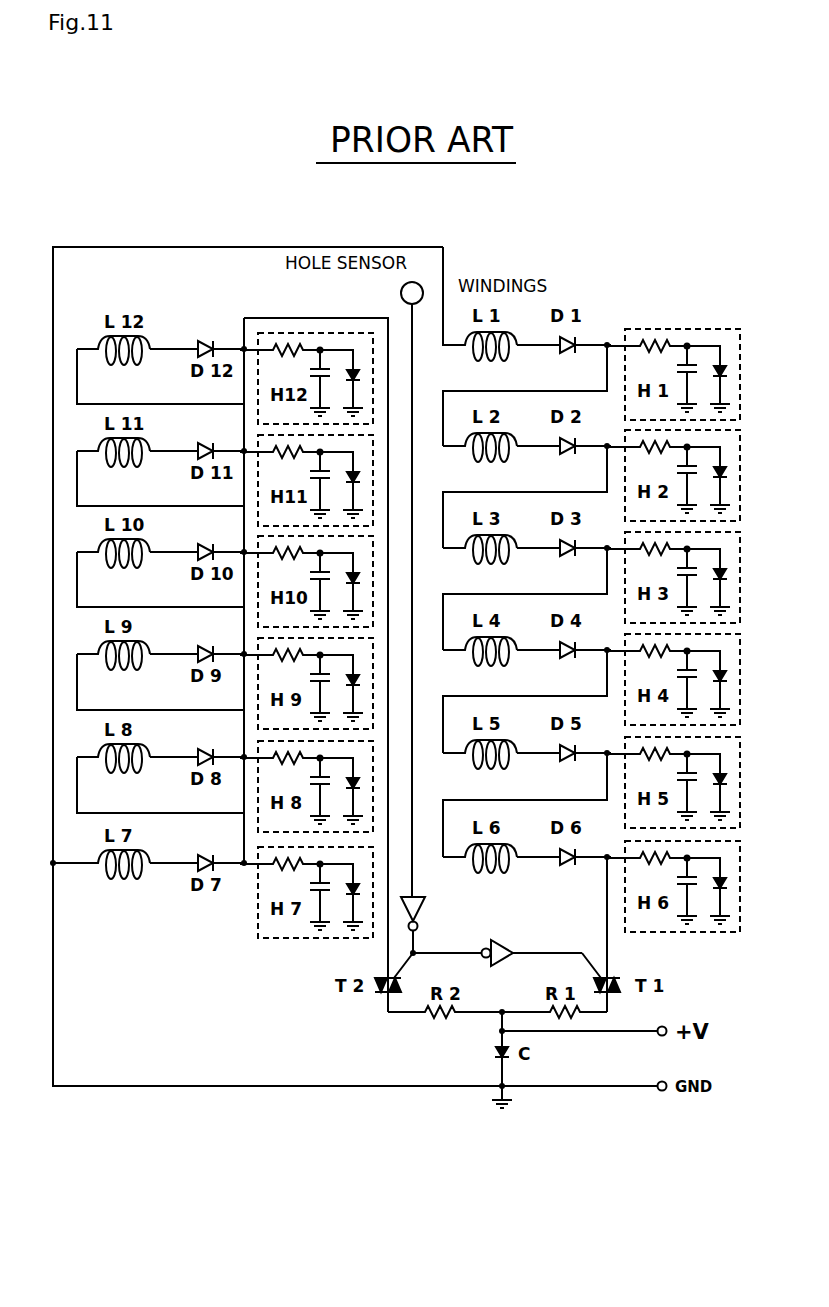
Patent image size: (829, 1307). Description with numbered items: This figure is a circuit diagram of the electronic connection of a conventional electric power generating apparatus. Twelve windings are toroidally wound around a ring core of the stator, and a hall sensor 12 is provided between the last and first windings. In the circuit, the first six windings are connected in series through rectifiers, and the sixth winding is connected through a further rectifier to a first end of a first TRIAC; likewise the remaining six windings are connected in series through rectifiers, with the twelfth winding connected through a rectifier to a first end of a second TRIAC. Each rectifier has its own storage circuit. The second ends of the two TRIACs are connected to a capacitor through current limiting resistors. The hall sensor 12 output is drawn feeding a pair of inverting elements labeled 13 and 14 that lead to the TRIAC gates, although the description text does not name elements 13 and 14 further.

The hall sensor 12 is at (394, 586).
The inverter 13 is at (441, 912).
The inverter 14 is at (532, 947).